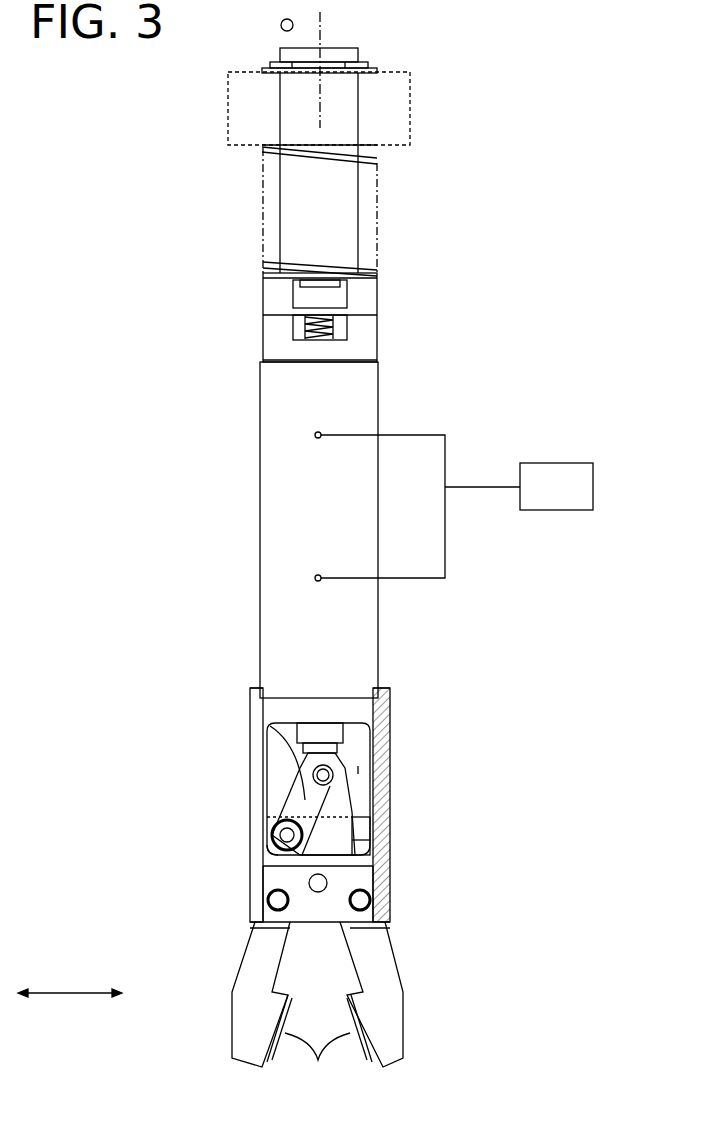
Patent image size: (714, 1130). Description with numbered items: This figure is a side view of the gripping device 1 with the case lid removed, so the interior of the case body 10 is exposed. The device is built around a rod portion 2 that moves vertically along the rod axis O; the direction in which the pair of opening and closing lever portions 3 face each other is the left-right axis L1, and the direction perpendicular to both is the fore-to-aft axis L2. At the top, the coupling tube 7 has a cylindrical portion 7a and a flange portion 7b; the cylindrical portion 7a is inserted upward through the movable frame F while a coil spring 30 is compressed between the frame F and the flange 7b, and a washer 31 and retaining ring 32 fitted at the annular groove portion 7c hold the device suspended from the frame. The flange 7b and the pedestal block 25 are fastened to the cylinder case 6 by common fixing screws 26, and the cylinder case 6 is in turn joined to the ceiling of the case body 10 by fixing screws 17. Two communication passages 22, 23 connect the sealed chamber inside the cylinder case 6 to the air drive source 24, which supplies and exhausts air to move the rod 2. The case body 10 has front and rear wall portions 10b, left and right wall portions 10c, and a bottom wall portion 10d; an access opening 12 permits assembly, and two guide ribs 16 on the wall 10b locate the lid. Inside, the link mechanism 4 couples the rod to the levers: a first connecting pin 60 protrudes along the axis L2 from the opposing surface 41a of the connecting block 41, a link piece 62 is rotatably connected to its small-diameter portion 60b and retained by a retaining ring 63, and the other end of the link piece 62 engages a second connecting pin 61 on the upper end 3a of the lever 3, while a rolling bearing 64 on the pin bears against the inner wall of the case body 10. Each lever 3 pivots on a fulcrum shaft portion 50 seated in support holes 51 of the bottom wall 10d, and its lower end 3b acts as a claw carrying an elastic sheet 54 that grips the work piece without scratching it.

The gripping device 1 is at (527, 170).
The rod portion 2 is at (335, 752).
The opening and closing lever portion 3 is at (228, 990).
The upper end of opening and closing lever portion 3a is at (283, 742).
The lower end of opening and closing lever portion 3b is at (240, 1033).
The link mechanism 4 is at (190, 758).
The cylinder case 6 is at (365, 636).
The coupling tube 7 is at (348, 226).
The cylindrical portion 7a is at (348, 190).
The flange portion 7b is at (362, 286).
The annular groove portion 7c is at (333, 62).
The case body 10 is at (395, 713).
The front and rear wall portion 10b is at (355, 875).
The left and right wall portion 10c is at (232, 706).
The bottom wall portion 10d is at (318, 925).
The access opening 12 is at (358, 770).
The guide rib 16 is at (260, 888).
The fixing screw 17 is at (345, 733).
The communication passage 22 is at (314, 435).
The communication passage 23 is at (314, 578).
The air drive source 24 is at (558, 470).
The pedestal block 25 is at (365, 338).
The fixing screw 26 is at (327, 295).
The coil spring 30 is at (262, 150).
The washer 31 is at (365, 64).
The retaining ring 32 is at (377, 70).
The connecting block 41 is at (370, 830).
The opposing surface 41a is at (365, 850).
The fulcrum shaft portion 50 is at (262, 925).
The support hole 51 is at (276, 900).
The elastic sheet 54 is at (318, 1062).
The first connecting pin 60 is at (280, 835).
The small-diameter portion 60b is at (276, 855).
The second connecting pin 61 is at (313, 775).
The link piece 62 is at (300, 800).
The retaining ring 63 is at (276, 862).
The rolling bearing 64 is at (283, 817).
The movable frame F is at (410, 103).
The rod axis O is at (316, 38).
The left-right axis L1 is at (40, 993).
The fore-to-aft axis L2 is at (68, 995).